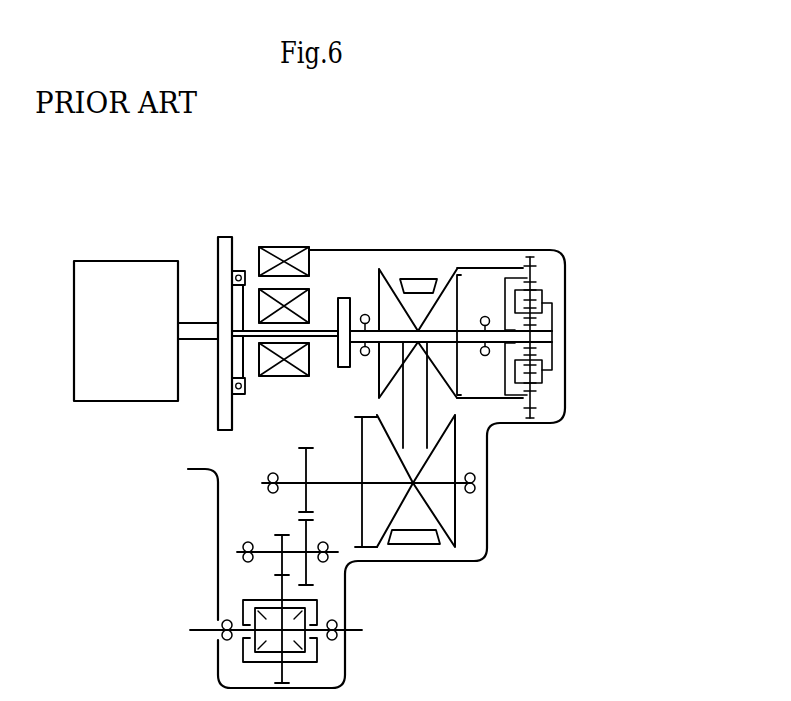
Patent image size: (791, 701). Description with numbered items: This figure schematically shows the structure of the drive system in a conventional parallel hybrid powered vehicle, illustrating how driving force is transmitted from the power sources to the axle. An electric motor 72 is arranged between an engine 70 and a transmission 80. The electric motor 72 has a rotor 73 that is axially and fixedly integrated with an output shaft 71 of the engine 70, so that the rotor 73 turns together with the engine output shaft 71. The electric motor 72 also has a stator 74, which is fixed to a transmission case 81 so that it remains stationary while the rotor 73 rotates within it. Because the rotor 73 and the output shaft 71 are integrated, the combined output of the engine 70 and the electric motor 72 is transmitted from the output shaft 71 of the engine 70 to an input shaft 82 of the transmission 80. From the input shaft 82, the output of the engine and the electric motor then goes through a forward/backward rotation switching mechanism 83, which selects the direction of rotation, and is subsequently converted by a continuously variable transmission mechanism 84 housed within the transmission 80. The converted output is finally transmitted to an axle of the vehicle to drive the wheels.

The engine 70 is at (137, 261).
The output shaft 71 is at (200, 342).
The electric motor 72 is at (313, 357).
The rotor 73 is at (310, 300).
The stator 74 is at (313, 260).
The transmission 80 is at (414, 238).
The transmission case 81 is at (522, 250).
The input shaft 82 is at (328, 346).
The forward/backward rotation switching mechanism 83 is at (550, 287).
The continuously variable transmission mechanism 84 is at (434, 269).